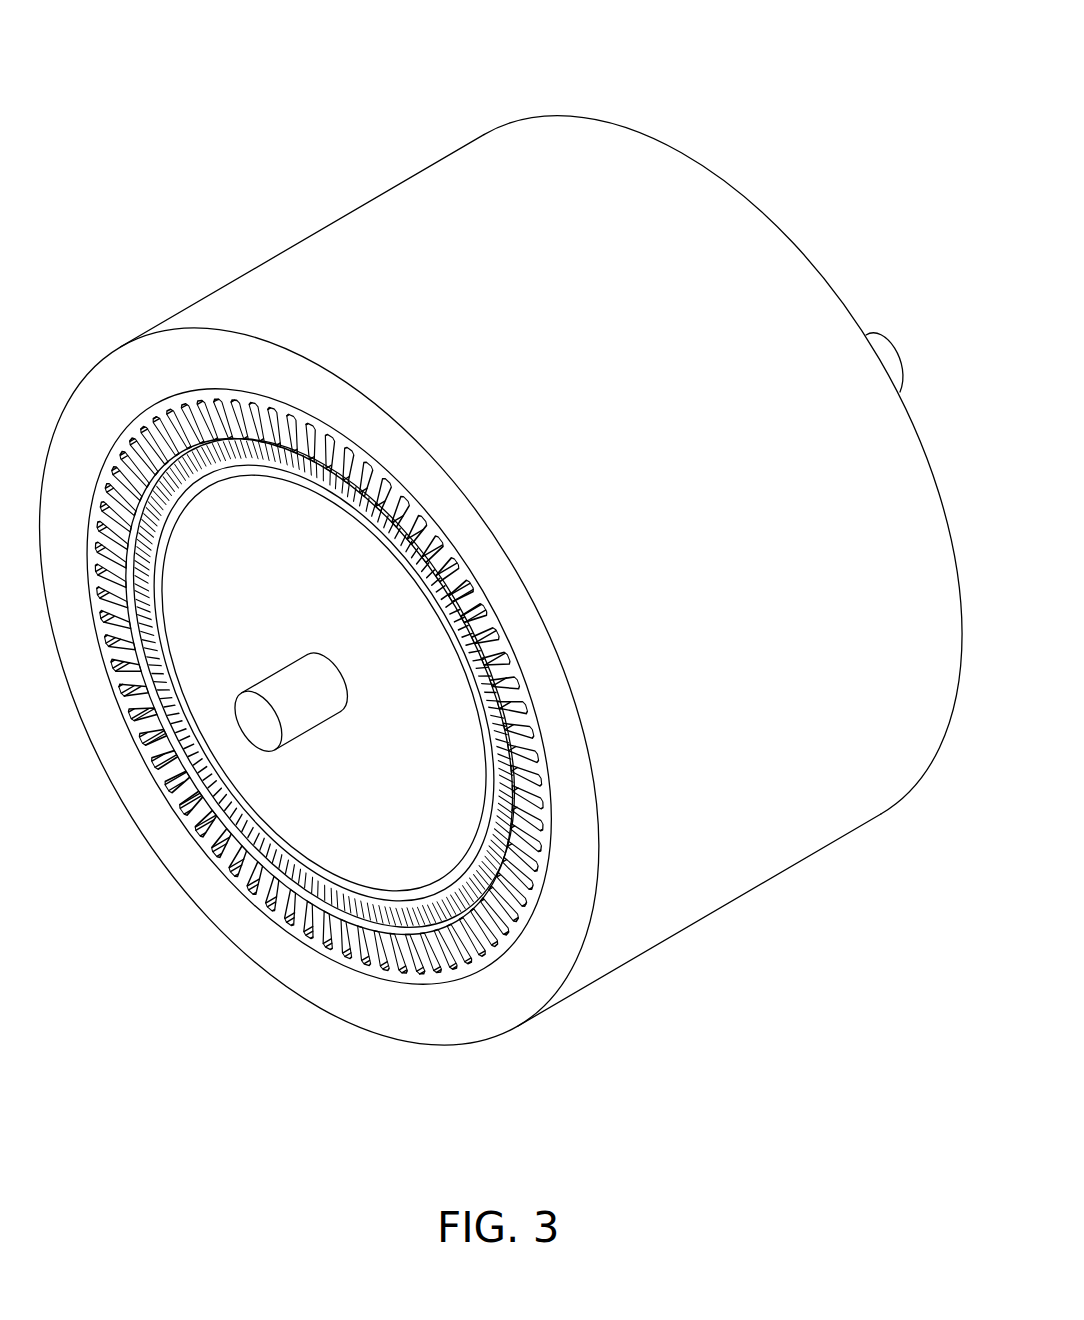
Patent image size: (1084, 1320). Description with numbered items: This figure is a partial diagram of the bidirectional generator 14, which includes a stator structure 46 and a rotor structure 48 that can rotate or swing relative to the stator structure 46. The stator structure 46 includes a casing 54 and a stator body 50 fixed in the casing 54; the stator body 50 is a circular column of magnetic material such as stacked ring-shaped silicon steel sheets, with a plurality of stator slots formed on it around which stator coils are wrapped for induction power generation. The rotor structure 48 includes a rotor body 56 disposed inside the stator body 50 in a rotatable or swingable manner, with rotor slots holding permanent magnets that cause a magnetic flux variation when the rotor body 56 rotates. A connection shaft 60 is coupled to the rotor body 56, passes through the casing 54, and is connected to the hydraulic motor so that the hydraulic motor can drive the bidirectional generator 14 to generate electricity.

The bidirectional generator 14 is at (692, 72).
The stator structure 46 is at (491, 1104).
The rotor structure 48 is at (321, 1104).
The stator body 50 is at (405, 980).
The casing 54 is at (468, 1016).
The rotor body 56 is at (306, 921).
The connection shaft 60 is at (259, 722).